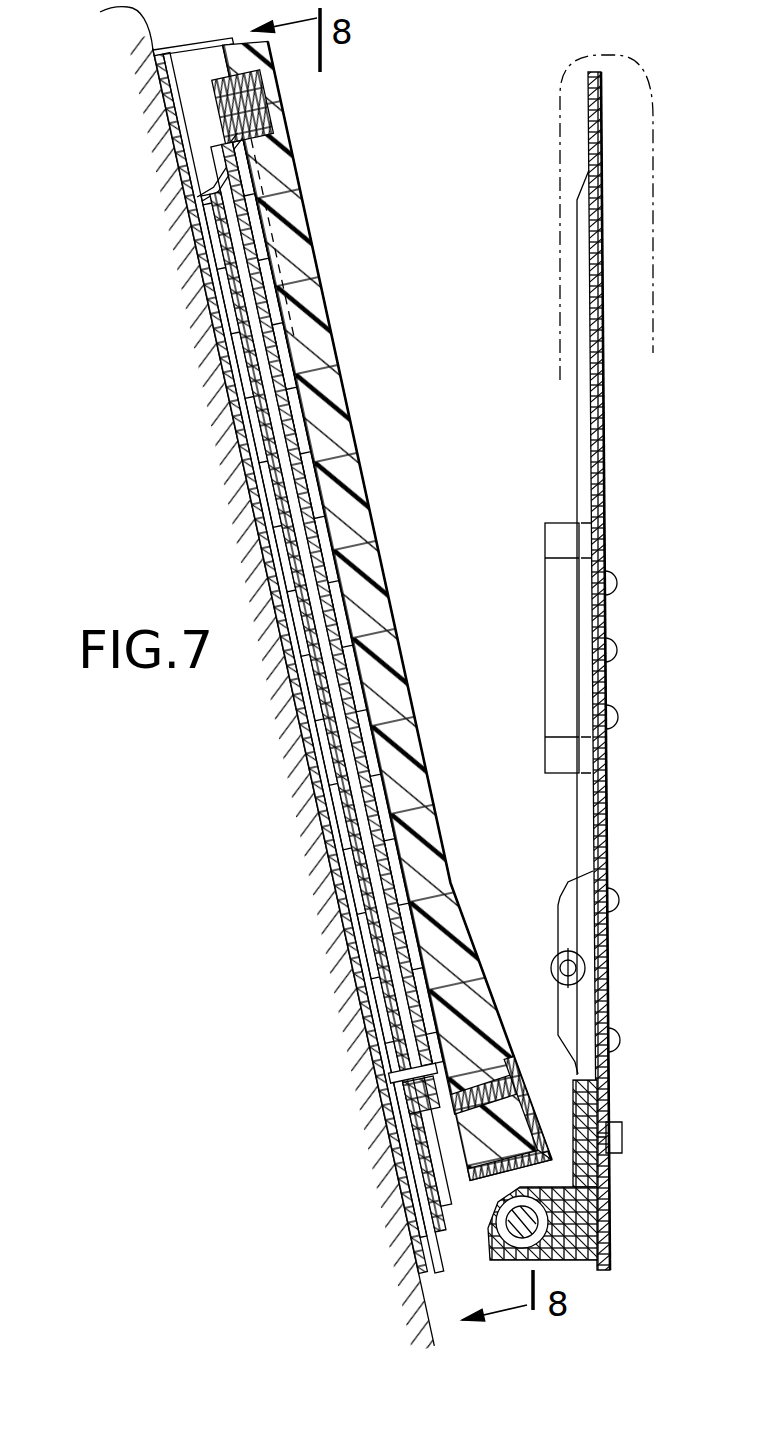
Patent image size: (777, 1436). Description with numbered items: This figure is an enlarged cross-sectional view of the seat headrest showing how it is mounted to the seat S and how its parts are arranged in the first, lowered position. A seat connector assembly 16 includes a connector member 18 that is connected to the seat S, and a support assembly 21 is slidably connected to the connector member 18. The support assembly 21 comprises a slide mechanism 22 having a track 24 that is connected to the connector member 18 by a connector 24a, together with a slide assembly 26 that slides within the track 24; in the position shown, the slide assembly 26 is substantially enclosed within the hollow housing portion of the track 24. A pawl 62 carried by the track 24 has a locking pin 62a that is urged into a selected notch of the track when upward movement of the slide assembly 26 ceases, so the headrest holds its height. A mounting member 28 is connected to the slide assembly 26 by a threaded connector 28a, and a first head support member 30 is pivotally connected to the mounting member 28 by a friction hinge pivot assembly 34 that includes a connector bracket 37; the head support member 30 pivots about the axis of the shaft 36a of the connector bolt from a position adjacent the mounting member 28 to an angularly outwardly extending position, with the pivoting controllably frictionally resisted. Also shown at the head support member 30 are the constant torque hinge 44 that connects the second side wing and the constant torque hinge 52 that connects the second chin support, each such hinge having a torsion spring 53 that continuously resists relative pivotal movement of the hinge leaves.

The seat S is at (130, 37).
The seat connector assembly 16 is at (228, 427).
The connector member 18 is at (345, 893).
The support assembly 21 is at (311, 650).
The slide mechanism 22 is at (362, 462).
The track 24 is at (203, 207).
The connector 24a is at (252, 230).
The slide assembly 26 is at (355, 818).
The mounting member 28 is at (355, 565).
The threaded connector 28a is at (272, 115).
The first head support member 30 is at (600, 755).
The friction hinge pivot assembly 34 is at (549, 1241).
The shaft 36a is at (495, 1232).
The connector bracket 37 is at (545, 1130).
The constant torque hinge 44 is at (548, 530).
The constant torque hinge 52 is at (556, 957).
The torsion spring 53 is at (560, 968).
The pawl 62 is at (408, 1000).
The locking pin 62a is at (395, 1082).